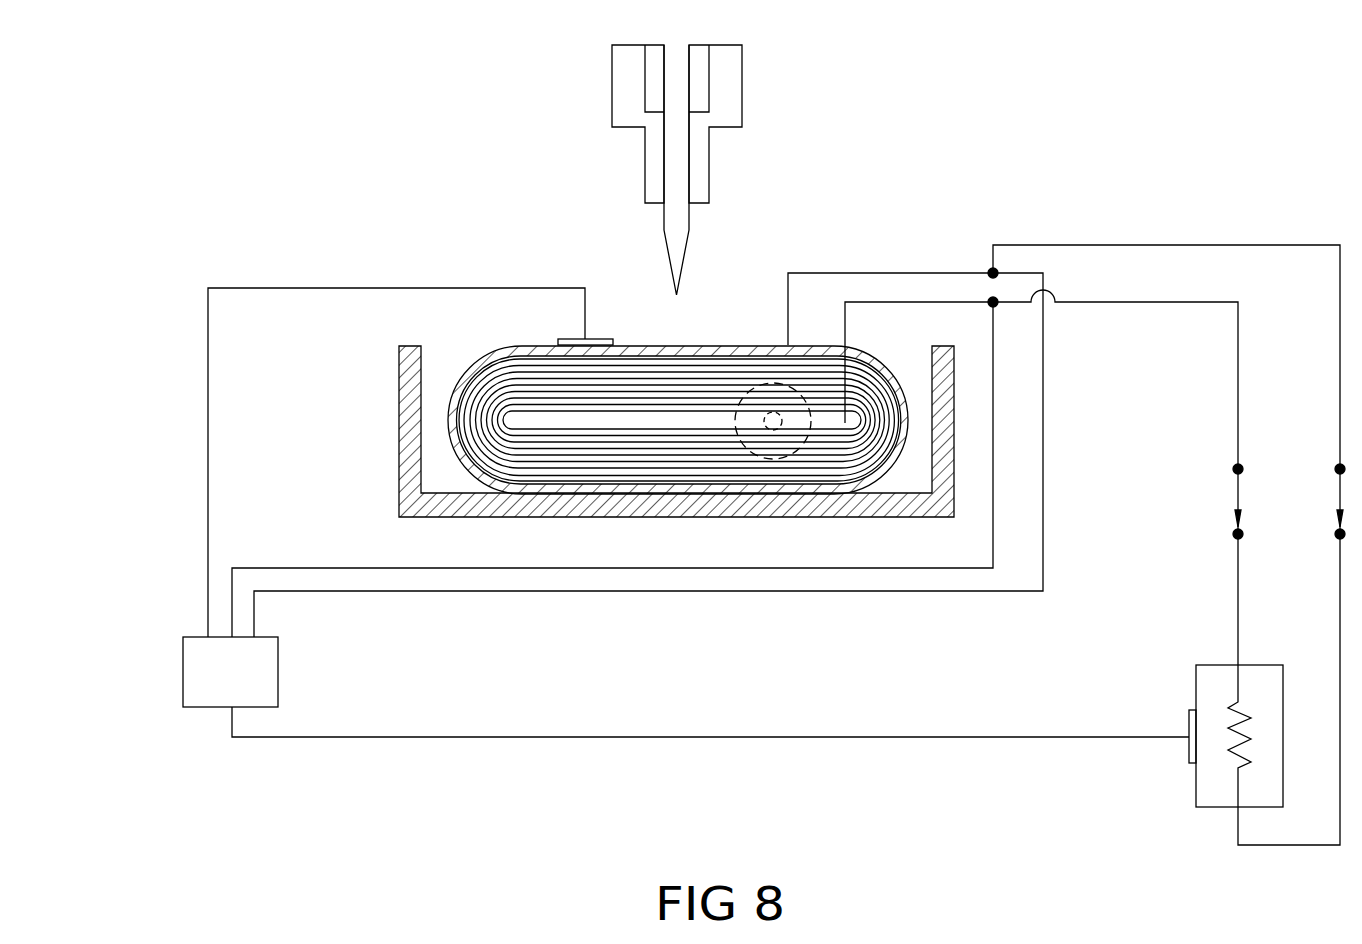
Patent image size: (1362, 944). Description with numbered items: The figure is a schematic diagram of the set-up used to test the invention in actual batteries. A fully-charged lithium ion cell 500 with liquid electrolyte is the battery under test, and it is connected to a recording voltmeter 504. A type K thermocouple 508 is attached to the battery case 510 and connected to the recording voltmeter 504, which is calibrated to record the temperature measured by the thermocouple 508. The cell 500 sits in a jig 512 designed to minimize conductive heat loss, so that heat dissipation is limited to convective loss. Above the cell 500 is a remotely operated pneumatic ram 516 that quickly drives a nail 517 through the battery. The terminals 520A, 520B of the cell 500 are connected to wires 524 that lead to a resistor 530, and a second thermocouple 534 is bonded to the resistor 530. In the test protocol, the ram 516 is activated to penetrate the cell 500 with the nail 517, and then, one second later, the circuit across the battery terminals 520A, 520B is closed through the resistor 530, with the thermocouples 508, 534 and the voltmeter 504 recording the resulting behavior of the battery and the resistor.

The lithium ion cell 500 is at (677, 395).
The recording voltmeter 504 is at (183, 672).
The thermocouple 508 is at (598, 339).
The battery case 510 is at (655, 345).
The jig 512 is at (399, 420).
The pneumatic ram 516 is at (742, 85).
The nail 517 is at (668, 260).
The terminal 520A is at (788, 327).
The terminal 520B is at (845, 341).
The wires 524 is at (1118, 245).
The resistor 530 is at (1283, 737).
The second thermocouple 534 is at (1189, 722).